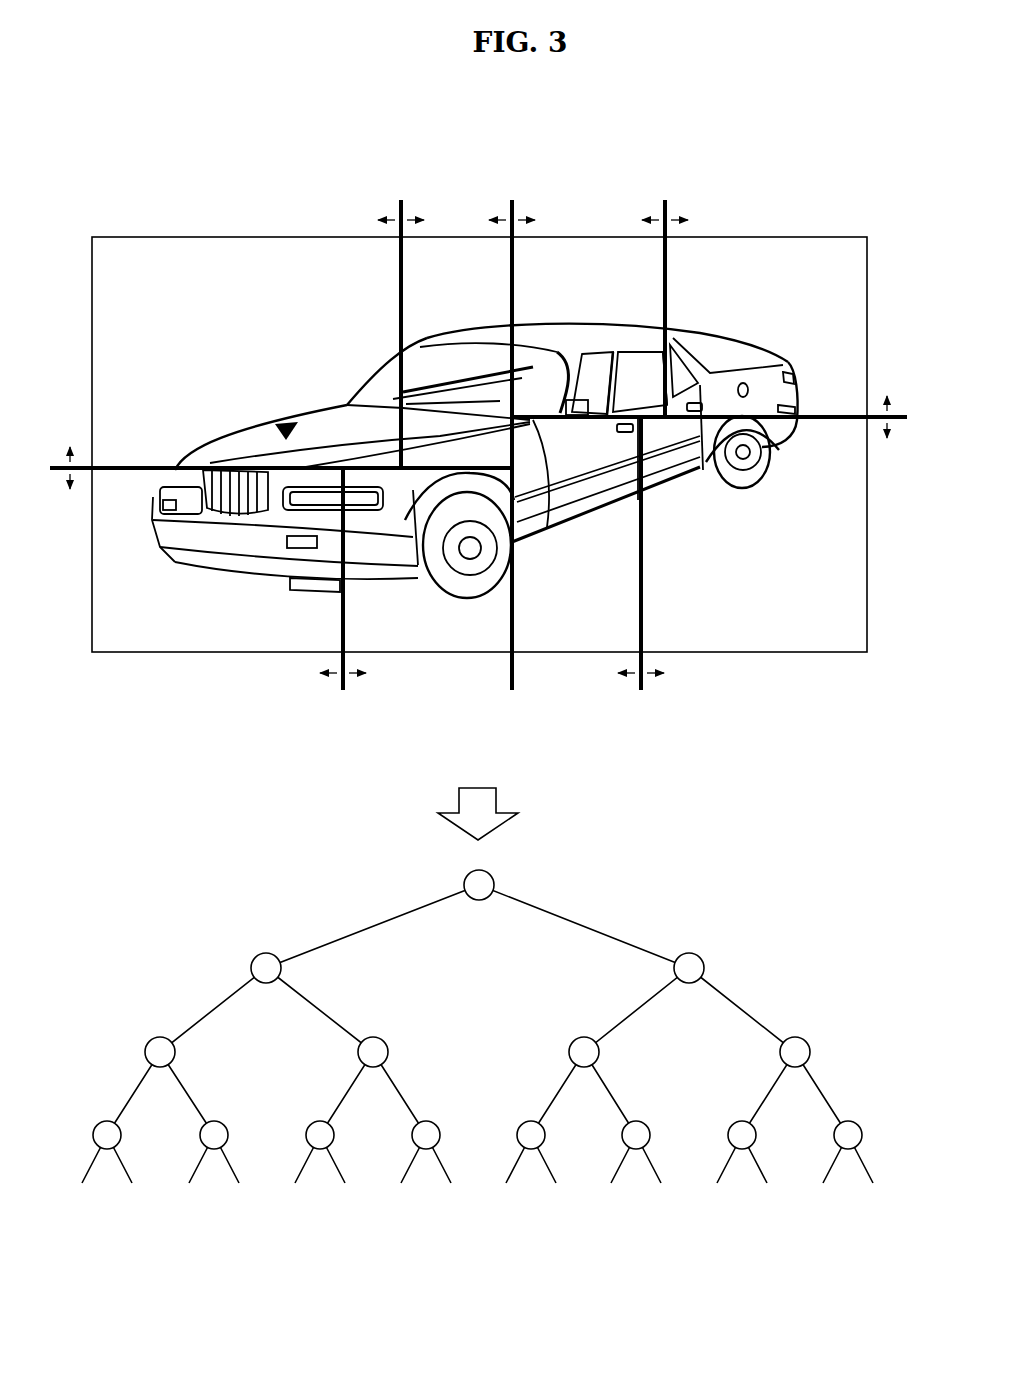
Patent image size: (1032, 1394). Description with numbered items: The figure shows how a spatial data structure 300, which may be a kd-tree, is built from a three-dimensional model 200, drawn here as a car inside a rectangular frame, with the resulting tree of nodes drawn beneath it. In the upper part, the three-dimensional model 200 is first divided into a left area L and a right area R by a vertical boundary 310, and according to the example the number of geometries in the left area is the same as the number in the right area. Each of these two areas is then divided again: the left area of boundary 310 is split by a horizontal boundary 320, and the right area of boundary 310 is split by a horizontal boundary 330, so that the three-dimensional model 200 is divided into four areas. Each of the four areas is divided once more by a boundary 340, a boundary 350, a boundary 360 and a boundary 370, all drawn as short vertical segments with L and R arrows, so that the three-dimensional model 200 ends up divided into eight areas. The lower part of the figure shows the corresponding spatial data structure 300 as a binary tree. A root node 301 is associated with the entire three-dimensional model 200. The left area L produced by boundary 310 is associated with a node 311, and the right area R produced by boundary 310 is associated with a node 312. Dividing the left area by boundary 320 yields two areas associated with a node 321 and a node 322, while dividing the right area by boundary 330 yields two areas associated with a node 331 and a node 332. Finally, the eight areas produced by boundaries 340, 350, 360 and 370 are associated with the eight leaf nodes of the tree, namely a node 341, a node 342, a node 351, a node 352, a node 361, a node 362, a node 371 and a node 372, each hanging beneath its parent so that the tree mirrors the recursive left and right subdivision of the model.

The 3D model 200 is at (195, 180).
The spatial data structure 300 is at (142, 870).
The boundary 310 is at (512, 200).
The boundary 320 is at (50, 468).
The boundary 330 is at (907, 417).
The boundary 340 is at (343, 690).
The boundary 350 is at (401, 200).
The boundary 360 is at (665, 200).
The boundary 370 is at (641, 690).
The node 301 is at (479, 900).
The node 311 is at (266, 983).
The node 312 is at (689, 983).
The node 321 is at (160, 1067).
The node 322 is at (373, 1067).
The node 331 is at (584, 1067).
The node 332 is at (795, 1067).
The node 341 is at (107, 1149).
The node 342 is at (214, 1149).
The node 351 is at (320, 1149).
The node 352 is at (426, 1149).
The node 361 is at (531, 1149).
The node 362 is at (636, 1149).
The node 371 is at (742, 1149).
The node 372 is at (848, 1149).